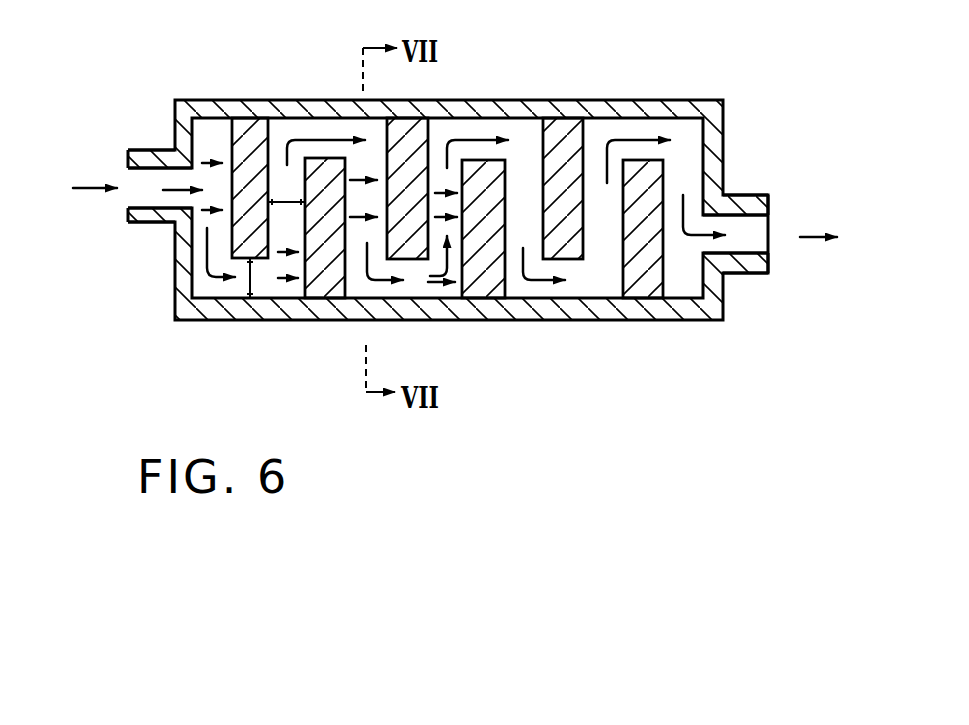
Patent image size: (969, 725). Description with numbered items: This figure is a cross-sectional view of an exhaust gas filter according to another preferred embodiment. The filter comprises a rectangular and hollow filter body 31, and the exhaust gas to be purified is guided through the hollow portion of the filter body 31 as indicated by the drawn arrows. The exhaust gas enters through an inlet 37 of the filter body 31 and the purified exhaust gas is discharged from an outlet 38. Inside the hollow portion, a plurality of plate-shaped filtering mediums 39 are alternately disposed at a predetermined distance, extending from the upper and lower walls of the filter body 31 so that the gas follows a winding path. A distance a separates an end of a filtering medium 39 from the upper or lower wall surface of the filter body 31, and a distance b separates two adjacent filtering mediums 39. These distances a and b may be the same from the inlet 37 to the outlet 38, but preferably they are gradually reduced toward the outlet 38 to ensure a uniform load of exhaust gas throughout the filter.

The filter body 31 is at (503, 103).
The inlet 37 is at (140, 190).
The outlet 38 is at (770, 243).
The plate-shaped filtering mediums 39 is at (565, 145).
The distance between filtering medium end and wall a is at (260, 278).
The distance between adjacent filtering mediums b is at (286, 189).